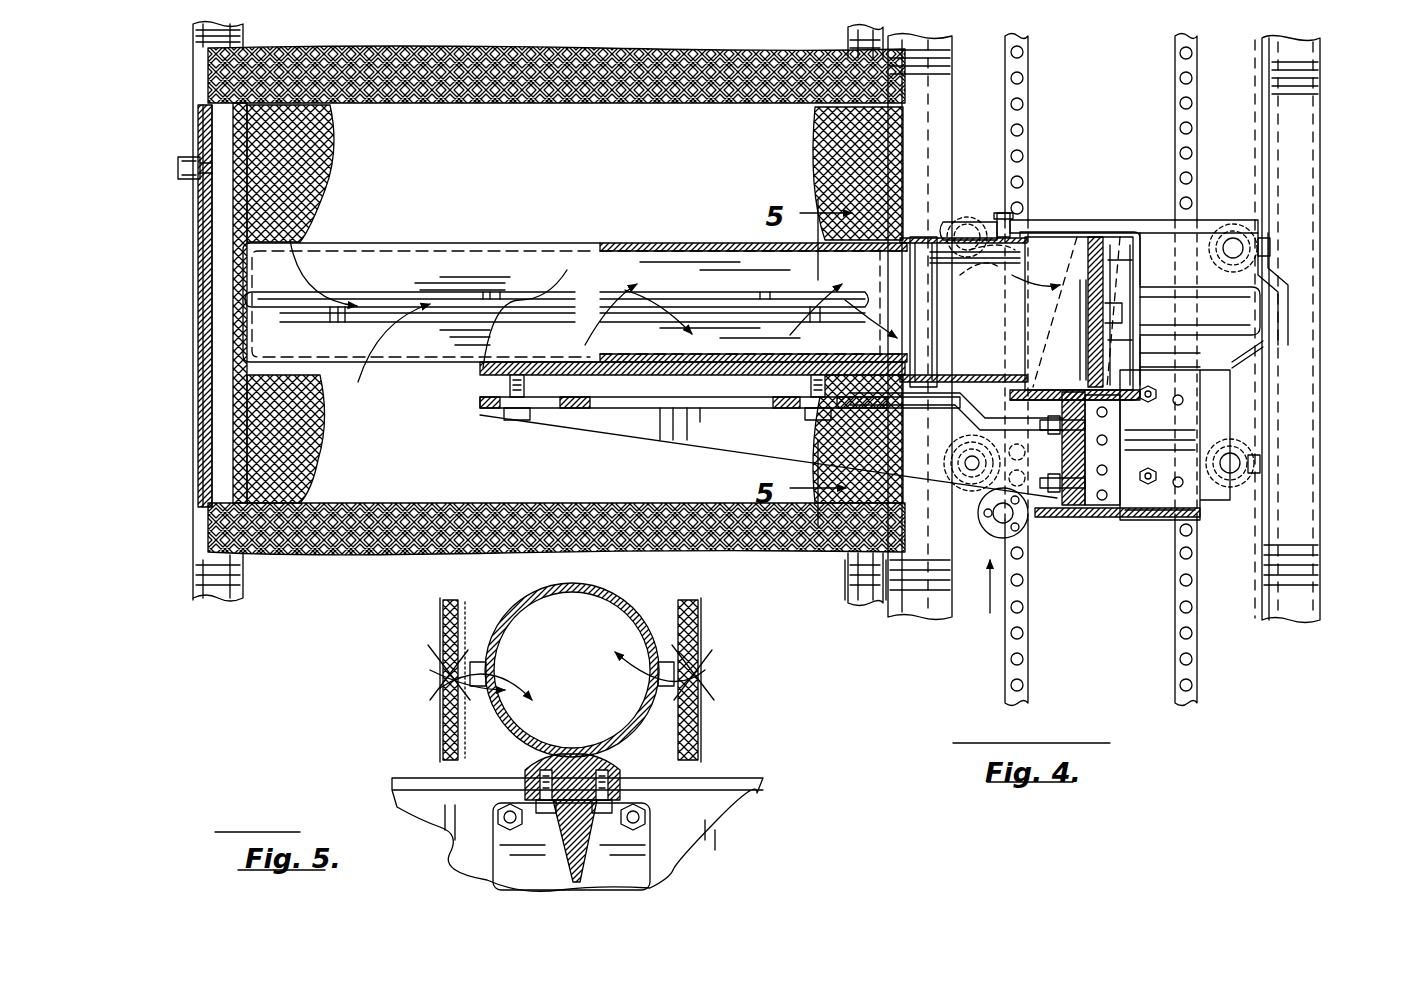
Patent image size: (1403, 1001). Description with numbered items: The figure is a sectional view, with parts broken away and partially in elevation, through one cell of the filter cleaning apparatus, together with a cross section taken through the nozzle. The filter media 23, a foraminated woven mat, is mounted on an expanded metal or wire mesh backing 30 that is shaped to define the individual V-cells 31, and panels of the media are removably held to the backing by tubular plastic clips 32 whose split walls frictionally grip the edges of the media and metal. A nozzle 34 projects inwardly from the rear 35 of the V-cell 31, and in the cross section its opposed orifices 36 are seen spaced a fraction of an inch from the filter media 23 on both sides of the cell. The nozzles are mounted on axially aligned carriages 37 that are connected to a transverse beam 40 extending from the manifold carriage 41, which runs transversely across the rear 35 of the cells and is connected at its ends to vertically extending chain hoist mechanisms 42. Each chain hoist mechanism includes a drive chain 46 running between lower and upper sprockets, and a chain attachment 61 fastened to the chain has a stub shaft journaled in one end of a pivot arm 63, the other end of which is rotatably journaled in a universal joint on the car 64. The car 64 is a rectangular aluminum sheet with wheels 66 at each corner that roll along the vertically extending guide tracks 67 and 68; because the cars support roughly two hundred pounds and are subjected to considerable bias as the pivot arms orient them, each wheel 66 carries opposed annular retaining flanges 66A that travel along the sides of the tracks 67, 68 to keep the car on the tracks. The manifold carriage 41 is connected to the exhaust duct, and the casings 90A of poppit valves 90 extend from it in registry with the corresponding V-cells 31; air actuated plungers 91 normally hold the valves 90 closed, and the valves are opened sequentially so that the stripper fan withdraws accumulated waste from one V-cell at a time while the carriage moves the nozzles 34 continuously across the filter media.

In FIG. 4, the filter media 23 is at (420, 127).
In FIG. 5, the filter media 23 is at (448, 622).
In FIG. 4, the expanded metal backing 30 is at (350, 60).
In FIG. 5, the expanded metal backing 30 is at (443, 718).
In FIG. 4, the V-cell 31 is at (300, 572).
In FIG. 4, the tubular plastic clip 32 is at (845, 565).
In FIG. 4, the nozzle 34 is at (510, 240).
In FIG. 5, the nozzle 34 is at (498, 622).
In FIG. 4, the rear of V-cell 35 is at (910, 112).
In FIG. 4, the orifice 36 is at (393, 300).
In FIG. 5, the orifice 36 is at (480, 670).
In FIG. 4, the carriage 37 is at (630, 402).
In FIG. 5, the carriage 37 is at (600, 830).
In FIG. 4, the transverse beam 40 is at (1125, 517).
In FIG. 5, the transverse beam 40 is at (745, 790).
In FIG. 4, the manifold carriage 41 is at (1070, 228).
In FIG. 4, the chain hoist mechanism 42 is at (1217, 655).
In FIG. 4, the drive chain 46 is at (1034, 117).
In FIG. 4, the chain attachment 61 is at (1027, 528).
In FIG. 4, the pivot arm 63 is at (1010, 380).
In FIG. 4, the car 64 is at (1162, 210).
In FIG. 4, the wheel 66 is at (955, 290).
In FIG. 4, the retaining flange 66A is at (1265, 215).
In FIG. 4, the guide track 67 is at (1258, 95).
In FIG. 4, the guide track 68 is at (945, 160).
In FIG. 4, the poppit valve 90 is at (1250, 305).
In FIG. 4, the valve casing 90A is at (937, 230).
In FIG. 4, the air actuated plunger 91 is at (1060, 352).